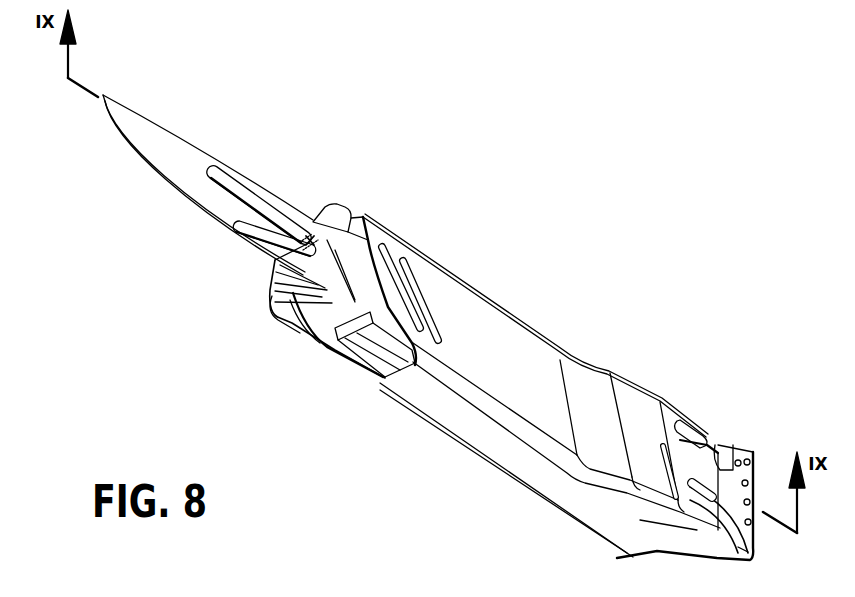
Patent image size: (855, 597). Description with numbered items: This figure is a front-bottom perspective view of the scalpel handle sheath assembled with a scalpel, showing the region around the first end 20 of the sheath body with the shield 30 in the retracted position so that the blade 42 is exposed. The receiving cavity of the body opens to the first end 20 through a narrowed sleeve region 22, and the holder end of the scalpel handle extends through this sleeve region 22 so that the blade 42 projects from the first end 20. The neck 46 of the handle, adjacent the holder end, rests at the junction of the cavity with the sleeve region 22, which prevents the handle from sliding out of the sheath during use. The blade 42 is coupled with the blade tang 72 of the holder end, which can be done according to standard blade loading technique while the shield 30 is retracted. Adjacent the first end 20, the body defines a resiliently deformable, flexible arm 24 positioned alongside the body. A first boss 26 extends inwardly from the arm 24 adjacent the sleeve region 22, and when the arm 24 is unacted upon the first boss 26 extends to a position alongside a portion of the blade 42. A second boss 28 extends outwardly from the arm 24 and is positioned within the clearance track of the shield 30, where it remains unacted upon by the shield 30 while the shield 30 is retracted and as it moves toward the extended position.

The blade 42 is at (173, 143).
The blade tang 72 is at (223, 183).
The sleeve region 22 is at (310, 227).
The first end 20 is at (320, 207).
The neck 46 is at (363, 217).
The shield 30 is at (557, 490).
The second boss 28 is at (270, 300).
The flexible arm 24 is at (292, 328).
The first boss 26 is at (318, 338).